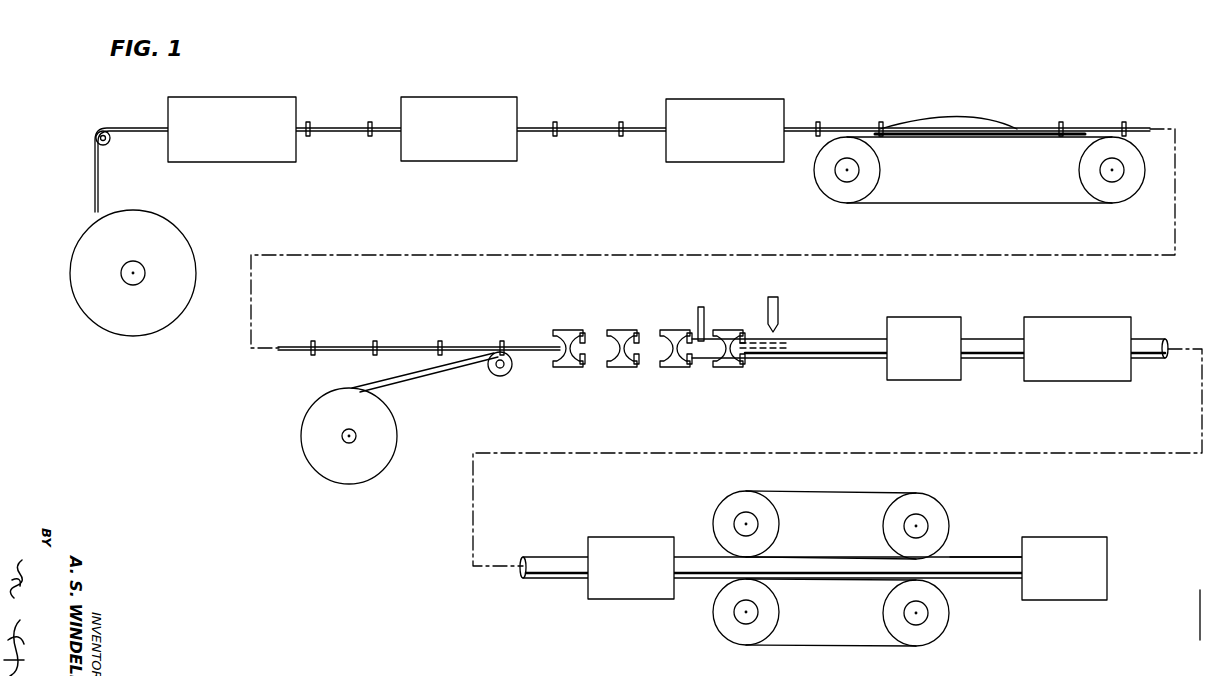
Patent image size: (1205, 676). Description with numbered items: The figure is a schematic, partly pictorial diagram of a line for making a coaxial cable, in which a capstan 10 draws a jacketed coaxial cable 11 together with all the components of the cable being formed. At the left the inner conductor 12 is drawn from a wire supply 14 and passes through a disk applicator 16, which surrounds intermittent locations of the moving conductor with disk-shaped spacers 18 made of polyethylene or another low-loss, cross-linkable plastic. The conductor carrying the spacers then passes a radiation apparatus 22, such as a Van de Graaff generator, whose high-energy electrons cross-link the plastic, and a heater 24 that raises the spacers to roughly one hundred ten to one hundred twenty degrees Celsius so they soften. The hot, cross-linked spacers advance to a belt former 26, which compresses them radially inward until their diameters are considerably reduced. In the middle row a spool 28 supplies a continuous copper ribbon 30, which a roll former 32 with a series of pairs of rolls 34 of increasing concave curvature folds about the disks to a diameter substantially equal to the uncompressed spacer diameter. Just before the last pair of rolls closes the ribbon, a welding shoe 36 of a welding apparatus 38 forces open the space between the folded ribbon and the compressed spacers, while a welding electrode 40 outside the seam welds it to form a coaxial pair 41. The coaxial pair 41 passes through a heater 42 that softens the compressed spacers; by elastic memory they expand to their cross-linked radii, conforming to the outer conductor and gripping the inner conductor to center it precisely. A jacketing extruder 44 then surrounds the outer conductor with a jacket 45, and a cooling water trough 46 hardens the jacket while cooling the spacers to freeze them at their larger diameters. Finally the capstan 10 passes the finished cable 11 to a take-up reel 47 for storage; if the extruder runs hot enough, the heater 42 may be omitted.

The capstan 10 is at (842, 480).
The jacketed coaxial cable 11 is at (975, 561).
The inner conductor 12 is at (142, 128).
The wire supply 14 is at (184, 230).
The disk applicator 16 is at (240, 97).
The disk-shaped spacers 18 is at (368, 124).
The radiation apparatus 22 is at (465, 97).
The heater 24 is at (735, 99).
The belt former 26 is at (988, 108).
The spool 28 is at (397, 437).
The ribbon 30 is at (478, 368).
The roll former 32 is at (649, 345).
The rolls 34 is at (608, 333).
The welding shoe 36 is at (705, 315).
The welding apparatus 38 is at (649, 330).
The welding electrode 40 is at (780, 310).
The coaxial pair 41 is at (818, 339).
The heater 42 is at (924, 317).
The jacketing extruder 44 is at (1080, 317).
The jacket 45 is at (556, 557).
The cooling water trough 46 is at (634, 537).
The take-up reel 47 is at (1070, 537).